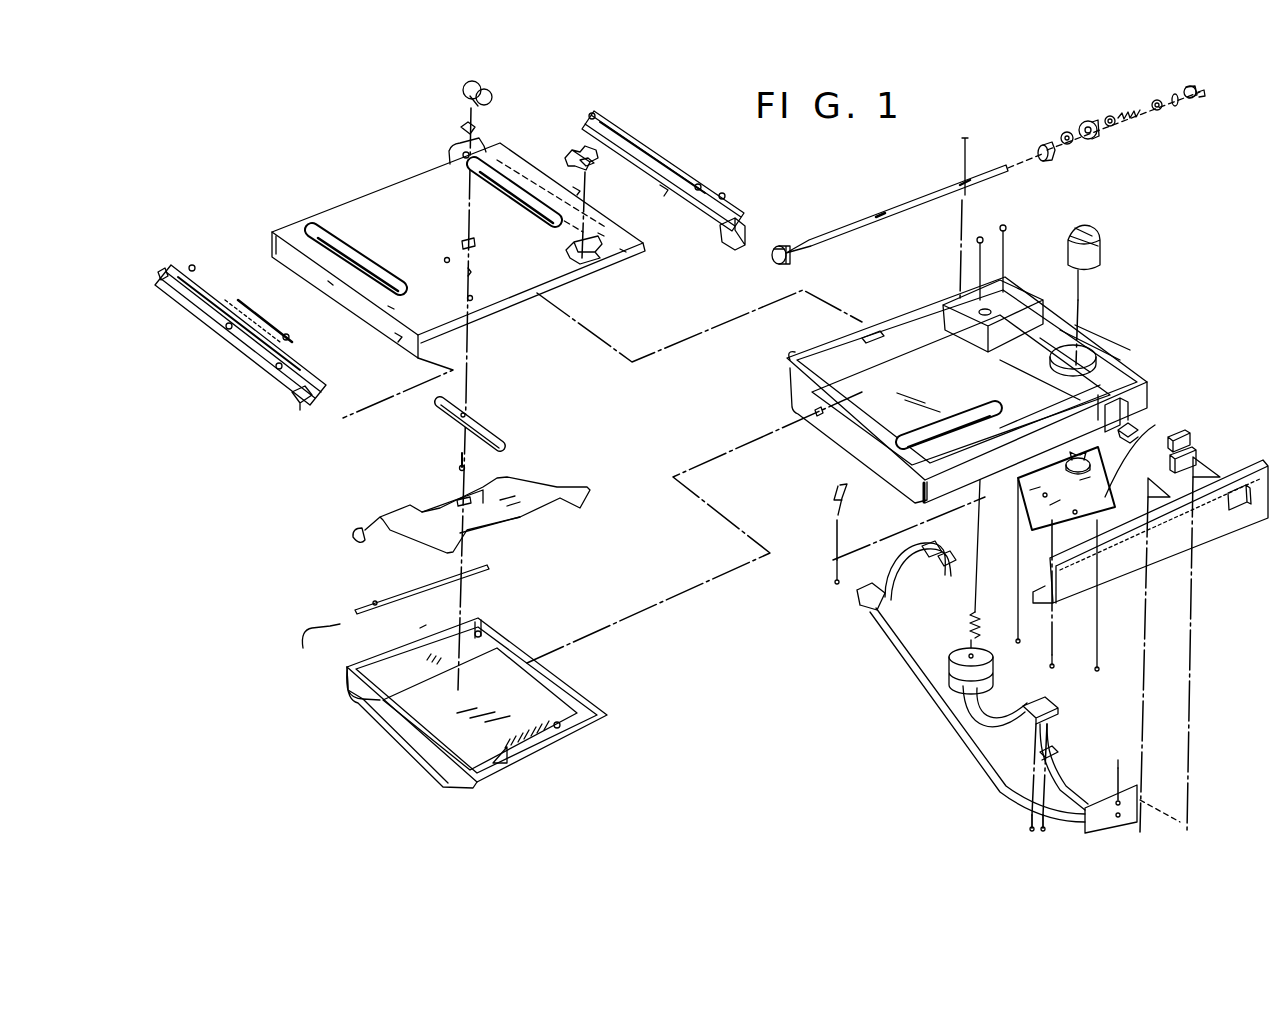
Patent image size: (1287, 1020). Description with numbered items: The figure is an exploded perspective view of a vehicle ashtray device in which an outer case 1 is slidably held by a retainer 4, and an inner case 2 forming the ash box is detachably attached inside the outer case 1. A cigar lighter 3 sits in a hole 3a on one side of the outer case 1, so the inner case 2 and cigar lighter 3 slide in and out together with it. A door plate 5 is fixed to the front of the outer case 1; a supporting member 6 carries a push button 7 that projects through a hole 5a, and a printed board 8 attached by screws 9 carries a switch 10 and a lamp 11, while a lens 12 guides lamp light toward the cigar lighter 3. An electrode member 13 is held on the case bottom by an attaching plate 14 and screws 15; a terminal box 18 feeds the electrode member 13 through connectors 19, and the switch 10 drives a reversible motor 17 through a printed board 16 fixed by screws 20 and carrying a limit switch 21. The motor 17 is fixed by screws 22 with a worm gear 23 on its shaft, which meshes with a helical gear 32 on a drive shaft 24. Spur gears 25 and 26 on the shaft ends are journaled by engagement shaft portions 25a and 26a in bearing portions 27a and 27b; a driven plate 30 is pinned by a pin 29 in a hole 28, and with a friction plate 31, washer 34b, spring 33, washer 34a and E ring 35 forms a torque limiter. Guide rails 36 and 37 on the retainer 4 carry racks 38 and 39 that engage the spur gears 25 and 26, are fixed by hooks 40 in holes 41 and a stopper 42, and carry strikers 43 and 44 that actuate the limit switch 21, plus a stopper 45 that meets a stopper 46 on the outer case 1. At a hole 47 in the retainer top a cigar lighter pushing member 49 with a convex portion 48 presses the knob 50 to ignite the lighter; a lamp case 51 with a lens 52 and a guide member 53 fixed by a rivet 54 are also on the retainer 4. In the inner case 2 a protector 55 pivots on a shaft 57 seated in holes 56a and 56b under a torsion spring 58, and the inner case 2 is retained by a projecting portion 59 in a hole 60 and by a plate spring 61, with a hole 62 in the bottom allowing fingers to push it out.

The outer case 1 is at (1130, 355).
The inner case 2 is at (520, 755).
The cigar lighter 3 is at (1102, 252).
The hole 3a is at (1082, 353).
The retainer 4 is at (378, 196).
The door plate 5 is at (1255, 470).
The hole 5a is at (1237, 510).
The supporting member 6 is at (1183, 432).
The push button 7 is at (1195, 453).
The printed board 8 is at (1105, 805).
The screws 9 is at (1062, 765).
The switch 10 is at (1148, 820).
The lamp 11 is at (1118, 790).
The lens 12 is at (1130, 425).
The electrode member 13 is at (1091, 468).
The attaching plate 14 is at (1155, 425).
The screws 15 is at (1095, 667).
The printed board 16 is at (1058, 710).
The motor 17 is at (947, 680).
The terminal box 18 is at (860, 606).
The connectors 19 is at (946, 577).
The screws 20 is at (1030, 822).
The limit switch 21 is at (992, 790).
The screws 22 is at (1003, 224).
The worm gear 23 is at (958, 628).
The drive shaft 24 is at (880, 216).
The spur gear 25 is at (1195, 100).
The engagement shaft portion 25a is at (1207, 95).
The spur gear 26 is at (792, 262).
The engagement shaft portion 26a is at (780, 245).
The bearing portion 27a is at (1005, 300).
The bearing portion 27b is at (820, 358).
The hole 28 is at (964, 178).
The pin 29 is at (964, 135).
The driven plate 30 is at (1045, 165).
The friction plate 31 is at (1070, 146).
The helical gear 32 is at (1095, 140).
The spring 33 is at (1130, 120).
The washer 34a is at (1153, 102).
The washer 34b is at (1106, 118).
The E ring 35 is at (1177, 108).
The guide rail 36 is at (678, 165).
The guide rail 37 is at (248, 352).
The rack 38 is at (701, 184).
The rack 39 is at (267, 318).
The hooks 40 is at (595, 120).
The holes 41 is at (325, 235).
The stopper 42 is at (163, 280).
The striker 43 is at (726, 243).
The striker 44 is at (662, 191).
The stopper 45 is at (294, 403).
The stopper 46 is at (817, 416).
The hole 47 is at (583, 262).
The convex portion 48 is at (591, 167).
The cigar lighter pushing member 49 is at (578, 152).
The knob 50 is at (1120, 235).
The lamp case 51 is at (492, 96).
The lens 52 is at (462, 124).
The guide member 53 is at (497, 438).
The rivet 54 is at (458, 463).
The protector 55 is at (548, 490).
The hole 56a is at (490, 620).
The hole 56b is at (350, 672).
The shaft 57 is at (360, 603).
The torsion spring 58 is at (308, 628).
The projecting portion 59 is at (422, 633).
The hole 60 is at (873, 330).
The plate spring 61 is at (830, 492).
The hole 62 is at (920, 372).